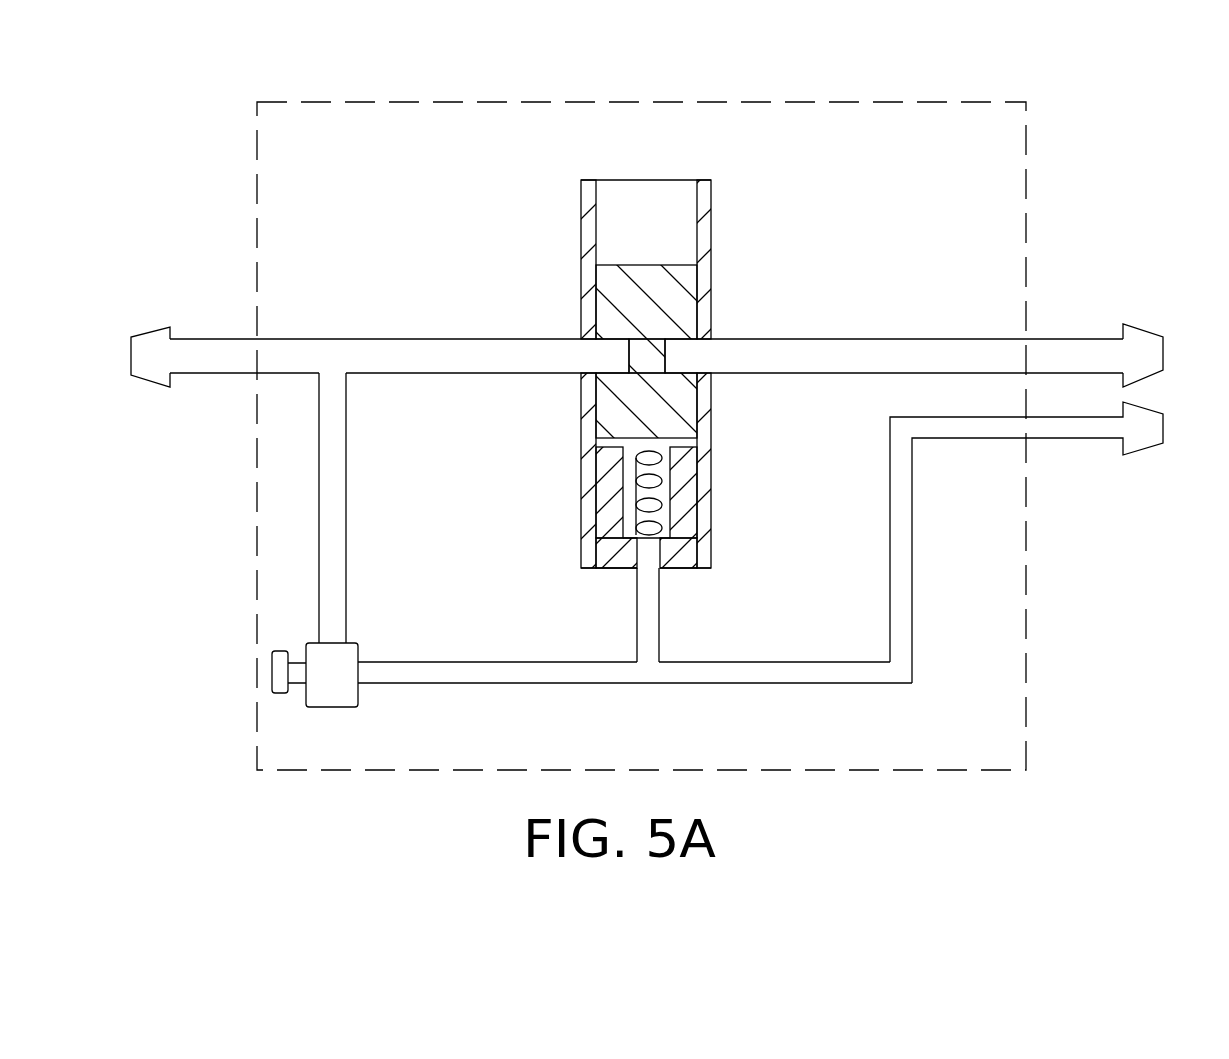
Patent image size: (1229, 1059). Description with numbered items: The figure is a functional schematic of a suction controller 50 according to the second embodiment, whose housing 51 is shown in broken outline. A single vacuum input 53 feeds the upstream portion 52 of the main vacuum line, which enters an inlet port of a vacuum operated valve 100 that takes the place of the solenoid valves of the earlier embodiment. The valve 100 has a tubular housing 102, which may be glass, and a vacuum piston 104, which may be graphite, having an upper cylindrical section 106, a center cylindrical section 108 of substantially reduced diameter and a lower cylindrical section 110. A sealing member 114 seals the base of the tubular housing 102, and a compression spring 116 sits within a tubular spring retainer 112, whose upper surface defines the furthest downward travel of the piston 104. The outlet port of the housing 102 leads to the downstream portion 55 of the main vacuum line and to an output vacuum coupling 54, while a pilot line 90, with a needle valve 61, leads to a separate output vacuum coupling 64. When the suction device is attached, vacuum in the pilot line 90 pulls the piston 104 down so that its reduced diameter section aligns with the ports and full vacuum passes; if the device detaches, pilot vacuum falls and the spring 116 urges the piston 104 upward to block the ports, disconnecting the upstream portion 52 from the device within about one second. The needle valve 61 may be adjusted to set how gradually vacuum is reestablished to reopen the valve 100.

The suction controller 50 is at (1082, 186).
The housing 51 is at (930, 102).
The upstream portion of the main vacuum line 52 is at (400, 338).
The vacuum input 53 is at (148, 332).
The output vacuum coupling 54 is at (1140, 326).
The downstream portion of the main vacuum line 55 is at (852, 374).
The needle valve 61 is at (344, 652).
The output vacuum coupling 64 is at (1150, 406).
The pilot line 90 is at (400, 662).
The vacuum operated valve 100 is at (711, 272).
The tubular housing 102 is at (704, 198).
The vacuum piston 104 is at (654, 361).
The upper cylindrical section 106 is at (650, 308).
The center cylindrical section 108 is at (645, 357).
The lower cylindrical section 110 is at (655, 405).
The tubular spring retainer 112 is at (692, 516).
The sealing member 114 is at (678, 572).
The compression spring 116 is at (640, 490).